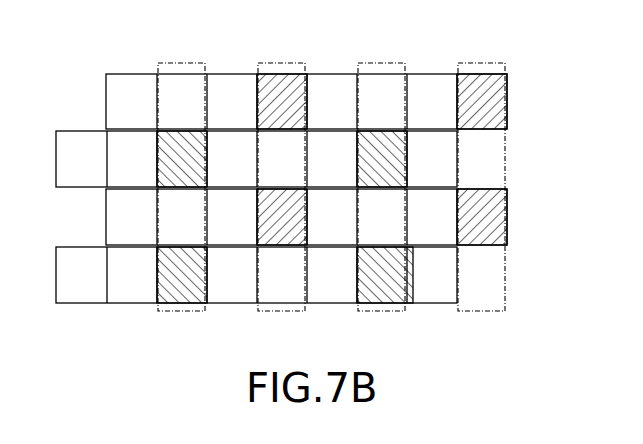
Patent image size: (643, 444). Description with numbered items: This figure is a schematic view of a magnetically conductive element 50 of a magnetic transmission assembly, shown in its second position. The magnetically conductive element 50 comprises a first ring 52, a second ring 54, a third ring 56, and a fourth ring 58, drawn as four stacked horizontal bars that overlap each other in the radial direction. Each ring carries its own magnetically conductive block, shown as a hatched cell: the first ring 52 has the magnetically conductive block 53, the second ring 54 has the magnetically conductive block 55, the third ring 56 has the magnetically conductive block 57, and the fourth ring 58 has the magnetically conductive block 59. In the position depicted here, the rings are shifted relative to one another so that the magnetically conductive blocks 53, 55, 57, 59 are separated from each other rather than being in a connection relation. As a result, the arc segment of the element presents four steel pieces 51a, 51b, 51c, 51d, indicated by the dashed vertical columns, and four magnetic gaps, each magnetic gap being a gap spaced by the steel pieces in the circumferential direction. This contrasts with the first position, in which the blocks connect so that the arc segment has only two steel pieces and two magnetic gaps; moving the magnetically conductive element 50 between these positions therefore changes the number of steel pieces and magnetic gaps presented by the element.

The magnetically conductive element 50 is at (336, 192).
The steel piece 51a is at (182, 63).
The steel piece 51b is at (283, 63).
The steel piece 51c is at (385, 63).
The steel piece 51d is at (489, 63).
The first ring 52 is at (336, 81).
The magnetically conductive block 53 is at (298, 100).
The second ring 54 is at (311, 107).
The magnetically conductive block 55 is at (162, 153).
The third ring 56 is at (336, 273).
The magnetically conductive block 57 is at (283, 232).
The fourth ring 58 is at (311, 302).
The magnetically conductive block 59 is at (183, 291).